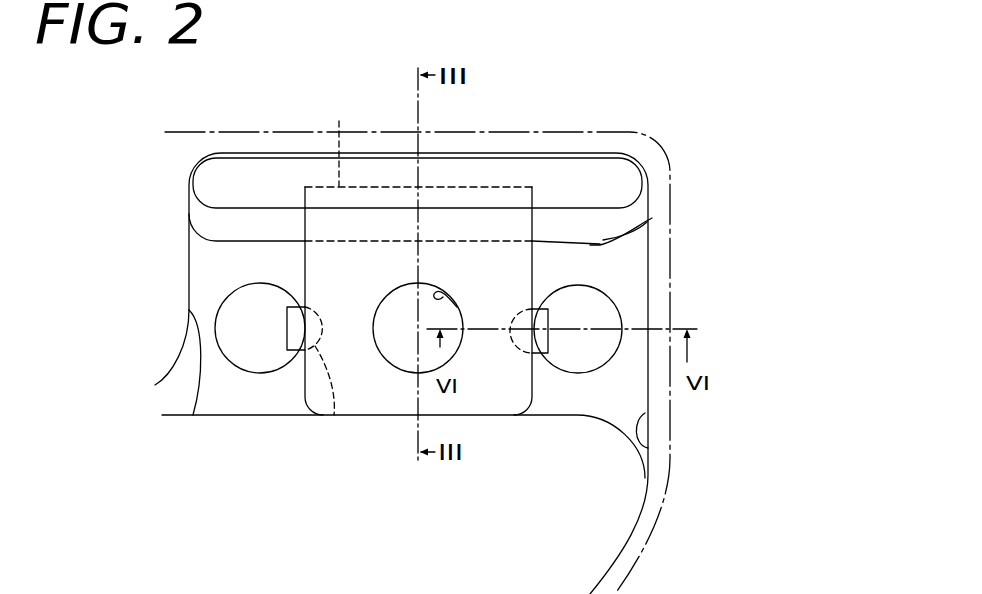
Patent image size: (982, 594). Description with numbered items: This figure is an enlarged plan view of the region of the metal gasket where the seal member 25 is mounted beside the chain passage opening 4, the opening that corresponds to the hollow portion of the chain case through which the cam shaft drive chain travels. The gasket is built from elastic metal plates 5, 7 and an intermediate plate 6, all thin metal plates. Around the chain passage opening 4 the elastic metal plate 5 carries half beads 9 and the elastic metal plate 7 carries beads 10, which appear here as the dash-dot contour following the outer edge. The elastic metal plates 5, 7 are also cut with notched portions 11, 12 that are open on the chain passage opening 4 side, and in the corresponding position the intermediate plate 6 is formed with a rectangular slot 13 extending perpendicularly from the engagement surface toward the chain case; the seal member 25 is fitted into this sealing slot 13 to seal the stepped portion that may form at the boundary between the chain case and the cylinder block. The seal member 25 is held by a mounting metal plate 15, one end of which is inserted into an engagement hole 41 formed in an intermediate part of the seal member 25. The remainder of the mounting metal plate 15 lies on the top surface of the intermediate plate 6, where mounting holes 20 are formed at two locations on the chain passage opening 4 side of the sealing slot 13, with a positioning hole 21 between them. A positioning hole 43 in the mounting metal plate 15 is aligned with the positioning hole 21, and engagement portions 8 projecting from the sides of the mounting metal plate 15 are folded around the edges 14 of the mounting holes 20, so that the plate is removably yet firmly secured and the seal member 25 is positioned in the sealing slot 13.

The chain passage opening 4 is at (455, 321).
The elastic metal plate 5 is at (472, 321).
The intermediate plate 6 is at (472, 321).
The elastic metal plate 7 is at (659, 152).
The engagement portion 8 is at (295, 338).
The half bead 9 is at (462, 322).
The bead 10 is at (235, 130).
The notched portion 11 is at (451, 270).
The notched portion 12 is at (193, 415).
The rectangular slot 13 is at (652, 218).
The edge 14 is at (418, 382).
The mounting metal plate 15 is at (487, 383).
The mounting hole 20 is at (258, 352).
The positioning hole 21 is at (405, 348).
The seal member 25 is at (272, 178).
The engagement hole 41 is at (337, 140).
The positioning hole 43 is at (443, 297).